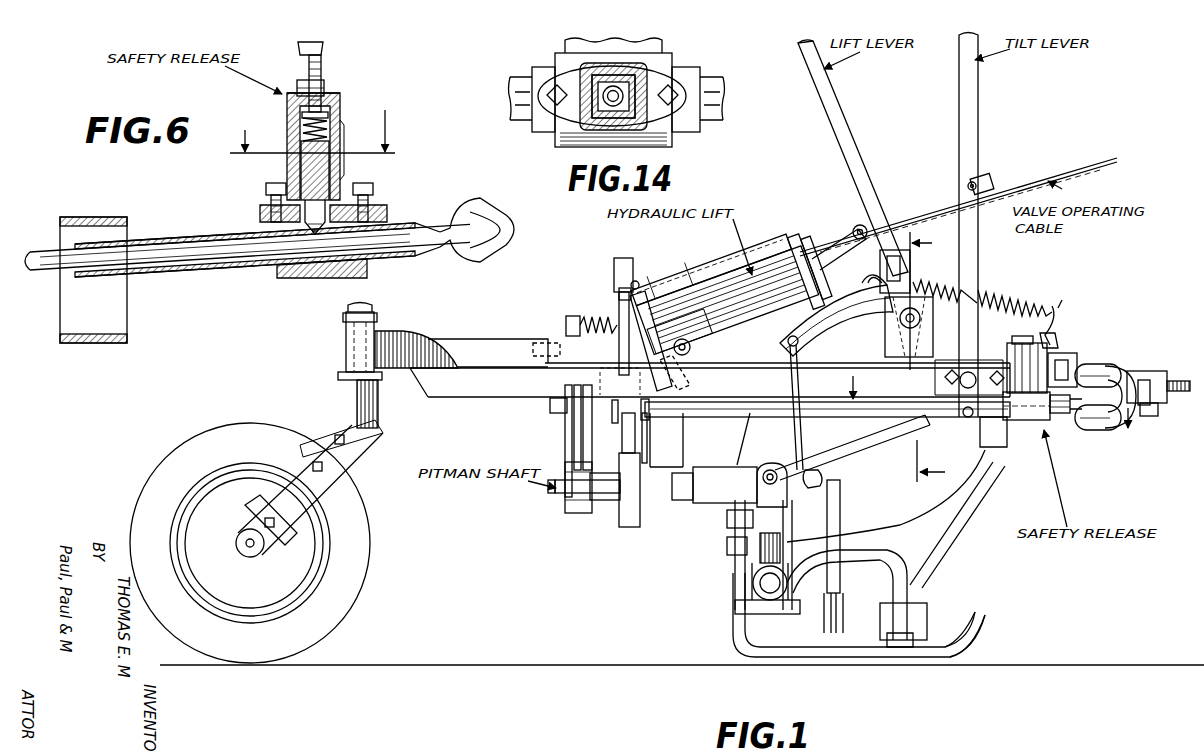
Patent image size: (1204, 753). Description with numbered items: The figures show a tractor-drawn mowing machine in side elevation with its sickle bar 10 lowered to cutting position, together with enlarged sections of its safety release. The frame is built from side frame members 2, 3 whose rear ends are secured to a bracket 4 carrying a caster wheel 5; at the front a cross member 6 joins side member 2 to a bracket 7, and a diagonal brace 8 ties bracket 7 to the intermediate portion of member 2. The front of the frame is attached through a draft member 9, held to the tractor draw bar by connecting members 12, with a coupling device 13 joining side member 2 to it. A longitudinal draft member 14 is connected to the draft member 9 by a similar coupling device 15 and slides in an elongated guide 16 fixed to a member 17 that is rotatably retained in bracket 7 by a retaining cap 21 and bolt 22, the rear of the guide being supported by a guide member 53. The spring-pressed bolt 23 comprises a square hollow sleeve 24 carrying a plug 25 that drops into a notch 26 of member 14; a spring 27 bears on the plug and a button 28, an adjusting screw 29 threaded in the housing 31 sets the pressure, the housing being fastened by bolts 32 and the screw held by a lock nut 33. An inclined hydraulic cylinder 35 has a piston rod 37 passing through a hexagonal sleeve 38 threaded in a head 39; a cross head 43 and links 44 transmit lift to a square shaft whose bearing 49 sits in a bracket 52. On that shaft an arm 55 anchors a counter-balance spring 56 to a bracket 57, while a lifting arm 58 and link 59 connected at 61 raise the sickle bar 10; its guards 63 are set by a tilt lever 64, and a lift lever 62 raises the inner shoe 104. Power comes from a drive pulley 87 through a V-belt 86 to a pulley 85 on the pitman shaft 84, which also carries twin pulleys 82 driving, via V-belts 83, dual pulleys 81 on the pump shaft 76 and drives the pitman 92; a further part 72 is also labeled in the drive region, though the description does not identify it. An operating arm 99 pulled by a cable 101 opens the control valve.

In FIG. 1, the side frame member 2 is at (487, 343).
In FIG. 1, the side frame member 3 is at (477, 385).
In FIG. 1, the bracket 4 is at (393, 332).
In FIG. 1, the caster wheel 5 is at (197, 446).
In FIG. 1, the cross member 6 is at (982, 411).
In FIG. 14, the bracket 7 is at (662, 47).
In FIG. 1, the bracket 7 is at (1040, 363).
In FIG. 1, the diagonal brace 8 is at (927, 364).
In FIG. 1, the draft member 9 is at (1157, 396).
In FIG. 1, the sickle bar 10 is at (803, 644).
In FIG. 1, the connecting members 12 is at (1180, 381).
In FIG. 1, the coupling device 13 is at (1113, 373).
In FIG. 6, the longitudinal draft member 14 is at (170, 297).
In FIG. 14, the longitudinal draft member 14 is at (520, 81).
In FIG. 1, the longitudinal draft member 14 is at (707, 410).
In FIG. 6, the coupling device 15 is at (508, 226).
In FIG. 1, the coupling device 15 is at (1110, 432).
In FIG. 6, the elongated guide 16 is at (162, 240).
In FIG. 14, the elongated guide 16 is at (697, 67).
In FIG. 1, the elongated guide 16 is at (1050, 423).
In FIG. 6, the member 17 is at (370, 273).
In FIG. 14, the member 17 is at (668, 138).
In FIG. 1, the member 17 is at (1030, 415).
In FIG. 1, the retaining cap 21 is at (1016, 341).
In FIG. 1, the bolt 22 is at (1055, 344).
In FIG. 6, the spring-pressed bolt 23 is at (309, 183).
In FIG. 6, the hollow sleeve 24 is at (330, 166).
In FIG. 14, the hollow sleeve 24 is at (585, 125).
In FIG. 6, the plug 25 is at (317, 237).
In FIG. 6, the notch 26 is at (316, 238).
In FIG. 6, the spring 27 is at (330, 119).
In FIG. 14, the spring 27 is at (601, 110).
In FIG. 6, the button 28 is at (343, 106).
In FIG. 6, the adjusting screw 29 is at (322, 56).
In FIG. 6, the housing 31 is at (331, 90).
In FIG. 14, the housing 31 is at (580, 108).
In FIG. 6, the bolts 32 is at (270, 183).
In FIG. 14, the bolts 32 is at (546, 89).
In FIG. 6, the lock nut 33 is at (305, 82).
In FIG. 1, the hydraulic cylinder 35 is at (764, 280).
In FIG. 1, the piston rod 37 is at (935, 181).
In FIG. 1, the sleeve 38 is at (838, 247).
In FIG. 1, the head 39 is at (810, 250).
In FIG. 1, the cross head 43 is at (977, 178).
In FIG. 1, the links 44 is at (900, 203).
In FIG. 1, the end bearing 49 is at (904, 327).
In FIG. 1, the bracket 52 is at (930, 343).
In FIG. 6, the guide member 53 is at (74, 344).
In FIG. 1, the guide member 53 is at (877, 421).
In FIG. 1, the arm 55 is at (865, 282).
In FIG. 1, the spring 56 is at (1027, 303).
In FIG. 1, the bracket 57 is at (1060, 308).
In FIG. 1, the lifting arm 58 is at (813, 331).
In FIG. 1, the link 59 is at (793, 428).
In FIG. 1, the link connection 61 is at (822, 475).
In FIG. 1, the lift lever 62 is at (836, 132).
In FIG. 1, the guards 63 is at (863, 648).
In FIG. 1, the tilt lever 64 is at (975, 88).
In FIG. 1, the pin 72 is at (610, 426).
In FIG. 1, the shaft 76 is at (547, 406).
In FIG. 1, the dual pulleys 81 is at (567, 426).
In FIG. 1, the twin pulleys 82 is at (563, 509).
In FIG. 1, the V-belts 83 is at (565, 448).
In FIG. 1, the pitman shaft 84 is at (607, 500).
In FIG. 1, the pulley 85 is at (622, 530).
In FIG. 1, the V-belt 86 is at (628, 435).
In FIG. 1, the drive pulley 87 is at (612, 258).
In FIG. 1, the pitman 92 is at (843, 578).
In FIG. 1, the operating arm 99 is at (630, 316).
In FIG. 1, the cable 101 is at (672, 283).
In FIG. 1, the inner shoe 104 is at (967, 618).